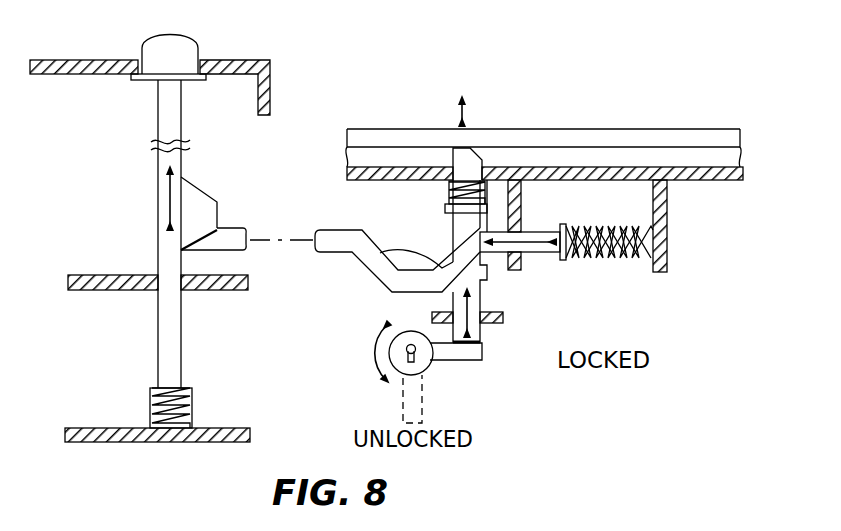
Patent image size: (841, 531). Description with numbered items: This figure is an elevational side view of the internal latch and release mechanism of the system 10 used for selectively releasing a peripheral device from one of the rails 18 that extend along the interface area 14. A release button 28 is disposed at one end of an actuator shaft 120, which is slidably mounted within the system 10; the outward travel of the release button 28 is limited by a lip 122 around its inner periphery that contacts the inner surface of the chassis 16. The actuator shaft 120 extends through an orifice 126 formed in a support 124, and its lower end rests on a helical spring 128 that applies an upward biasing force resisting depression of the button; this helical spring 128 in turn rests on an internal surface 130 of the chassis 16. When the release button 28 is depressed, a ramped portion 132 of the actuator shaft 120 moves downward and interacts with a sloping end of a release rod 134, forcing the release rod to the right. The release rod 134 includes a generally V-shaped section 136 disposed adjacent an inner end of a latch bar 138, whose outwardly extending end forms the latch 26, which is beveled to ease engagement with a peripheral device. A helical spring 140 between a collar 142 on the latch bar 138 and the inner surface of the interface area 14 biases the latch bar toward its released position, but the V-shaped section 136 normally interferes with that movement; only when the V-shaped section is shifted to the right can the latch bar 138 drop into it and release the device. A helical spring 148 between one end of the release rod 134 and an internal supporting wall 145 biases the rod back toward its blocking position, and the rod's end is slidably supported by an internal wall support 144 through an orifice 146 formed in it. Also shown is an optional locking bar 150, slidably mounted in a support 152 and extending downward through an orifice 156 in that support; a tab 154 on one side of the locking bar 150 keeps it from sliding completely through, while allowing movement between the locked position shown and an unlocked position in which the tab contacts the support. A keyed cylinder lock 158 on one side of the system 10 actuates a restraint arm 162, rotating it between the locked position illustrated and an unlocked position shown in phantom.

The system 10 is at (758, 378).
The interface area 14 is at (388, 166).
The chassis 16 is at (85, 60).
The rails 18 is at (586, 128).
The latch 26 is at (482, 160).
The release button 28 is at (200, 50).
The actuator shaft 120 is at (182, 106).
The lip 122 is at (138, 79).
The support 124 is at (95, 275).
The orifice 126 is at (182, 291).
The helical spring 128 is at (150, 404).
The internal surface 130 is at (70, 428).
The ramped portion 132 is at (207, 203).
The release rod 134 is at (240, 228).
The V-shaped section 136 is at (396, 236).
The latch bar 138 is at (453, 236).
The helical spring 140 is at (448, 192).
The collar 142 is at (445, 211).
The internal wall support 144 is at (522, 190).
The internal supporting wall 145 is at (668, 205).
The orifice 146 is at (522, 262).
The helical spring 148 is at (605, 263).
The locking bar 150 is at (453, 303).
The support 152 is at (432, 320).
The tab 154 is at (487, 280).
The orifice 156 is at (484, 330).
The keyed cylinder lock 158 is at (418, 360).
The restraint arm 162 is at (403, 408).